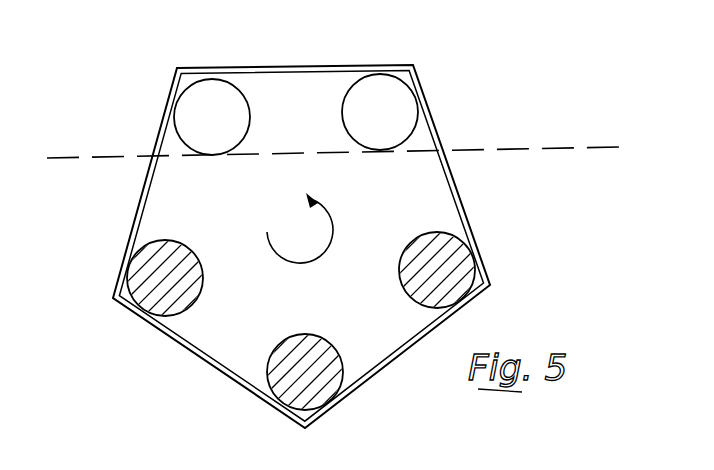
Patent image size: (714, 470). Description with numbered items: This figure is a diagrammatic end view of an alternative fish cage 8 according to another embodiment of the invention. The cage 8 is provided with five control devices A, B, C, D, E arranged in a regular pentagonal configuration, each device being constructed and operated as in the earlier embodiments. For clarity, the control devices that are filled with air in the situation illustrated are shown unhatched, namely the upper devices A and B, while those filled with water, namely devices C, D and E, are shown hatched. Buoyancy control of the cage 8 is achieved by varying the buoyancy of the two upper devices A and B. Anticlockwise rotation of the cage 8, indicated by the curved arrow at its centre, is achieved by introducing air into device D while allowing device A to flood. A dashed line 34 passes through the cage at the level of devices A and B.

The cage 8 is at (165, 359).
The horizontal reference plane 34 is at (543, 147).
The control device A is at (212, 92).
The control device B is at (380, 90).
The control device C is at (458, 255).
The control device D is at (282, 373).
The control device E is at (148, 258).